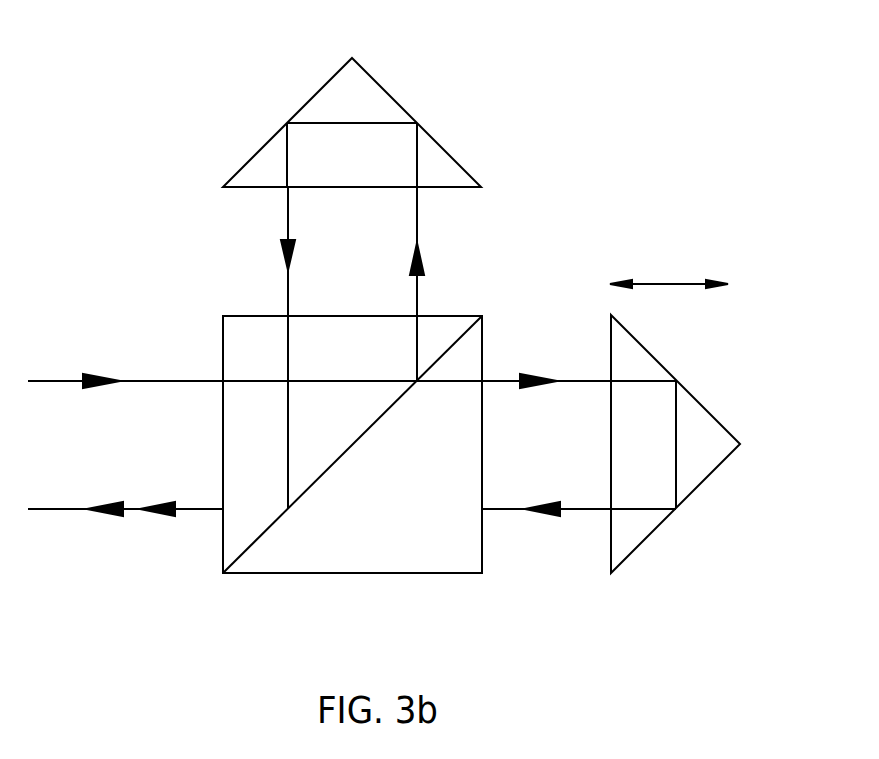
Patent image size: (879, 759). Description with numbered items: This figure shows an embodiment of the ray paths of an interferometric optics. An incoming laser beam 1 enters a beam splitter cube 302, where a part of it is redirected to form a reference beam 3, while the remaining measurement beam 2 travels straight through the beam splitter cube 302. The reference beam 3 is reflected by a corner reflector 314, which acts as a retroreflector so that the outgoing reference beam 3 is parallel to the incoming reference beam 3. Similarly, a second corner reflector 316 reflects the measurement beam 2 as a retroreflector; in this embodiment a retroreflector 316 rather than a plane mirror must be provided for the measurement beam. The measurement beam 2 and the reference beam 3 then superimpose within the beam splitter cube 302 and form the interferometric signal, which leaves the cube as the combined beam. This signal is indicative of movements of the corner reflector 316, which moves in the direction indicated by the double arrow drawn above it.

The beam splitter cube 302 is at (222, 316).
The corner reflector 314 is at (363, 92).
The corner reflector 316 is at (698, 420).
The incoming laser beam 1 is at (157, 381).
The reference beam 3 is at (417, 155).
The measurement beam 2 is at (638, 509).